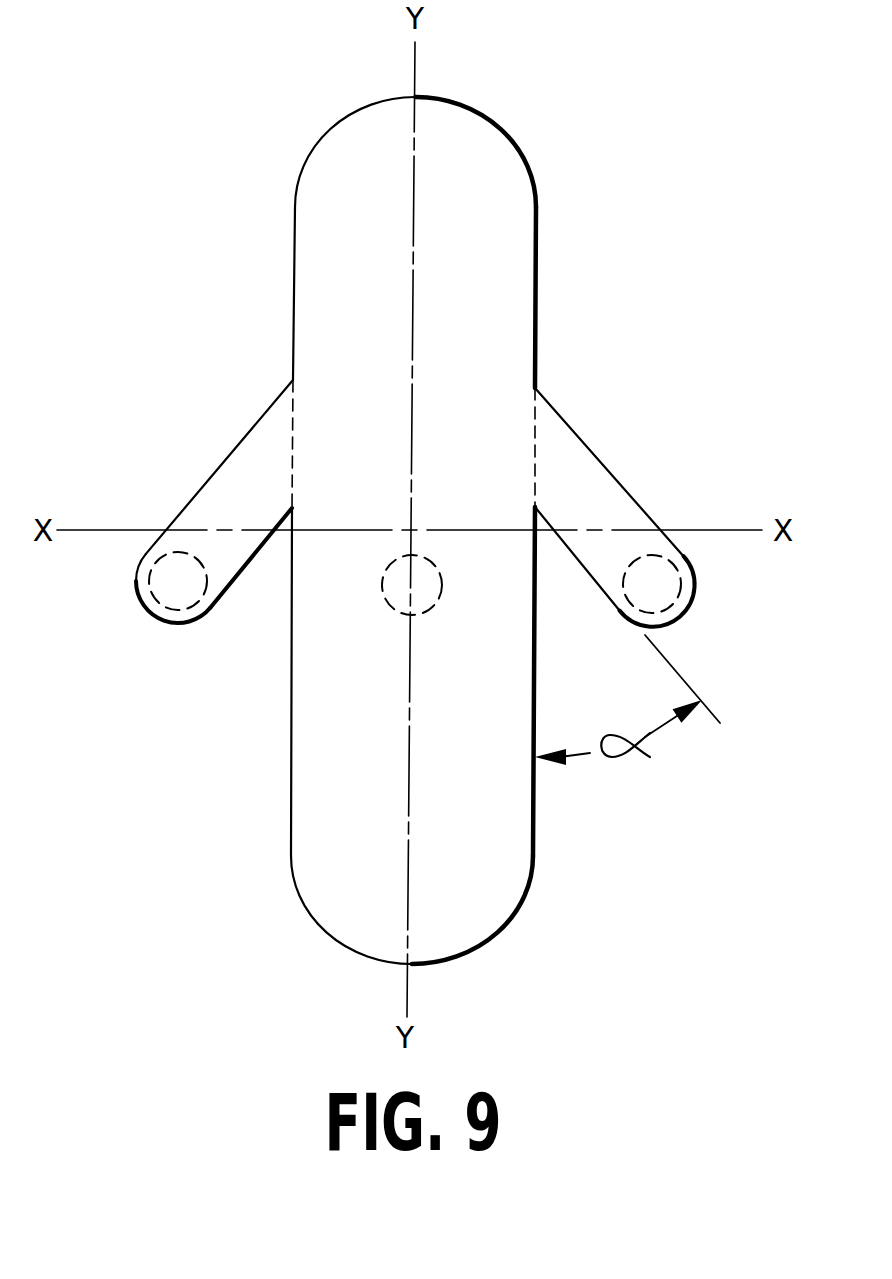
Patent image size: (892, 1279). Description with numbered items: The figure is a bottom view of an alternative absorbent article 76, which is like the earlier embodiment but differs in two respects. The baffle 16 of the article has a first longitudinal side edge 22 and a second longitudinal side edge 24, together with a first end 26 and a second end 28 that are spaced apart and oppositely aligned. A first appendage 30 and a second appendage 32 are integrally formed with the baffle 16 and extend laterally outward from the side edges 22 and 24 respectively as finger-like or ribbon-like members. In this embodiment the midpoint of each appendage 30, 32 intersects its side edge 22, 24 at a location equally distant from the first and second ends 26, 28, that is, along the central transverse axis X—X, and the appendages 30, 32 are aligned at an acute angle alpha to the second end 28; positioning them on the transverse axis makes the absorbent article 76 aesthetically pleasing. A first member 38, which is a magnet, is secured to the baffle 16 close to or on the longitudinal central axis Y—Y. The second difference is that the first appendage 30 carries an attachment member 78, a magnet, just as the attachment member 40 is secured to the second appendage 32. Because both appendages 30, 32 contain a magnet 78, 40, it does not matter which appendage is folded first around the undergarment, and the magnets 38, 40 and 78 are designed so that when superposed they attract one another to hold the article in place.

The baffle 16 is at (503, 230).
The first longitudinal side edge 22 is at (538, 306).
The second longitudinal side edge 24 is at (293, 225).
The first end 26 is at (487, 113).
The second end 28 is at (502, 925).
The first appendage 30 is at (600, 497).
The second appendage 32 is at (238, 465).
The first member 38 is at (395, 615).
The second member 40 is at (165, 623).
The absorbent article 76 is at (665, 155).
The attachment member 78 is at (670, 615).